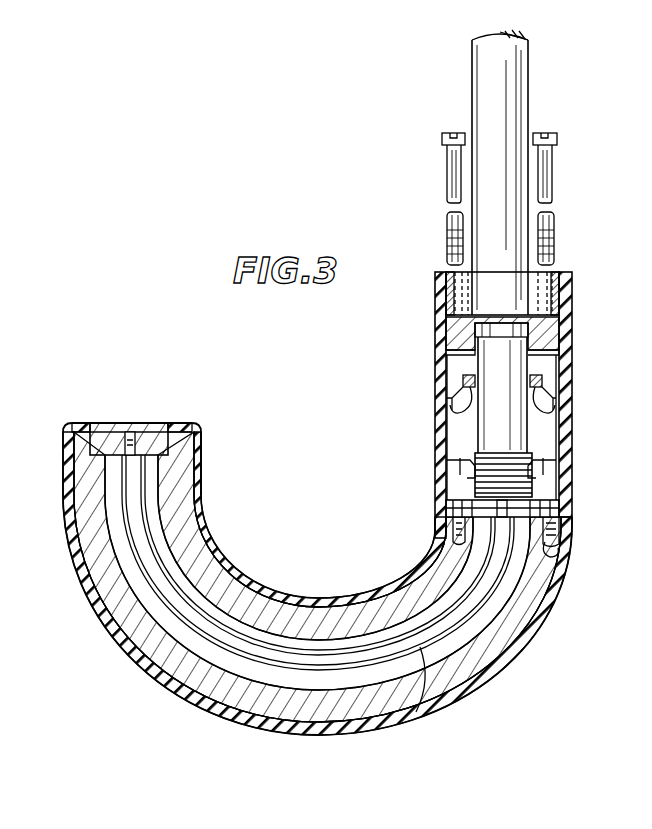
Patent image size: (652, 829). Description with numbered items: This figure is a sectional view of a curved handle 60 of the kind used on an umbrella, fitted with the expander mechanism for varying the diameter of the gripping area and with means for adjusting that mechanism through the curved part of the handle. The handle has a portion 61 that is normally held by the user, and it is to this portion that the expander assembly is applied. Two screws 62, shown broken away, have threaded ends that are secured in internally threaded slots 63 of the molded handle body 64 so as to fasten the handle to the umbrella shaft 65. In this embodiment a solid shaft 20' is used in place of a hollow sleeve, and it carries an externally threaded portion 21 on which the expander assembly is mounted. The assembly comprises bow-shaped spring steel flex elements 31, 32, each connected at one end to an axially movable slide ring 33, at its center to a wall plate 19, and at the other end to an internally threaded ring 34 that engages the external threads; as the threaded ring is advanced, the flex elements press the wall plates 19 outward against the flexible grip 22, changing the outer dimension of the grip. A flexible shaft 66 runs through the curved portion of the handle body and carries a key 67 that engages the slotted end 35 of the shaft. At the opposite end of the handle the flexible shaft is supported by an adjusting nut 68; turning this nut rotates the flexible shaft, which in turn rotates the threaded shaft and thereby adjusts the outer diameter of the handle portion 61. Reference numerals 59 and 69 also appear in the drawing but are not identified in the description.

The wall plates 19 is at (553, 494).
The solid shaft 20' is at (548, 388).
The externally threaded portion 21 is at (498, 466).
The flexible grip 22 is at (436, 386).
The flex element 31 is at (437, 416).
The flex element 32 is at (549, 452).
The slide ring 33 is at (546, 410).
The internally threaded ring 34 is at (441, 473).
The slotted end 35 is at (546, 516).
The cap member 59 is at (437, 325).
The handle 60 is at (327, 560).
The handle portion 61 is at (392, 447).
The screws 62 is at (452, 132).
The internally threaded slots 63 is at (556, 553).
The molded handle body 64 is at (510, 618).
The umbrella shaft 65 is at (513, 62).
The flexible shaft 66 is at (418, 706).
The key 67 is at (497, 510).
The adjusting nut 68 is at (106, 446).
The block 69 is at (530, 292).